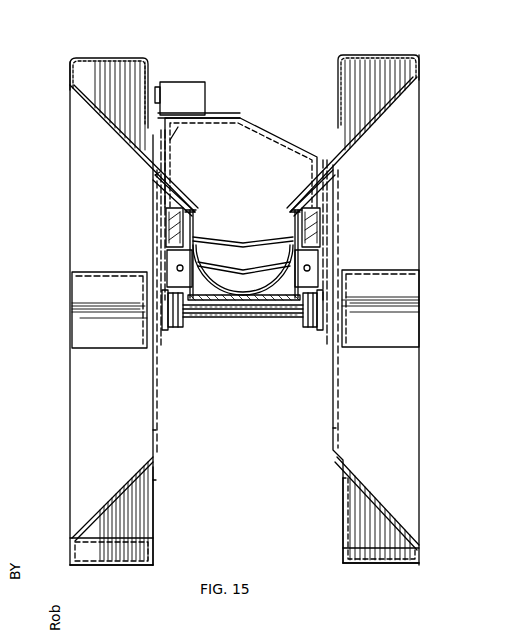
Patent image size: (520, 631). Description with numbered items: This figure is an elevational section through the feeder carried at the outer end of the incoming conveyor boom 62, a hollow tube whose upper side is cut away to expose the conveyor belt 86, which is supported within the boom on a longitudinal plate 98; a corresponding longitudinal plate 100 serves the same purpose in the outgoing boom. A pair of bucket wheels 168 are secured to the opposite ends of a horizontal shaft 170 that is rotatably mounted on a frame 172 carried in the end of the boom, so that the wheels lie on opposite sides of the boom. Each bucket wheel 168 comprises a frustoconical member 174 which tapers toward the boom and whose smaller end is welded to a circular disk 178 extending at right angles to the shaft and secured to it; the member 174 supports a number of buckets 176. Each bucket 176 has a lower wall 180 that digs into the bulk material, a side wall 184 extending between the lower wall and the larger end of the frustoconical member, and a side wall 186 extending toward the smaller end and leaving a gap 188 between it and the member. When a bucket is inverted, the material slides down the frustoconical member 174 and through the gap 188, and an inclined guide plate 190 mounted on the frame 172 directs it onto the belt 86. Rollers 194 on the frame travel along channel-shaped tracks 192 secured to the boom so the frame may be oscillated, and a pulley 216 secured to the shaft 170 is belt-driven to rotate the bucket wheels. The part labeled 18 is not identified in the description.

The frame 18 is at (377, 564).
The incoming conveyor boom 62 is at (287, 280).
The conveyor belt 86 is at (257, 237).
The longitudinal plate 98 is at (224, 252).
The longitudinal plate 100 is at (260, 270).
The bucket wheel 168 is at (68, 450).
The horizontal shaft 170 is at (215, 320).
The frame 172 is at (165, 330).
The frustoconical member 174 is at (338, 462).
The bucket 176 is at (67, 58).
The circular disk 178 is at (334, 428).
The lower wall 180 is at (144, 566).
The side wall 184 is at (420, 548).
The side wall 186 is at (154, 535).
The gap 188 is at (345, 478).
The inclined guide plate 190 is at (298, 207).
The channel-shaped track 192 is at (166, 212).
The roller 194 is at (168, 228).
The pulley 216 is at (160, 372).